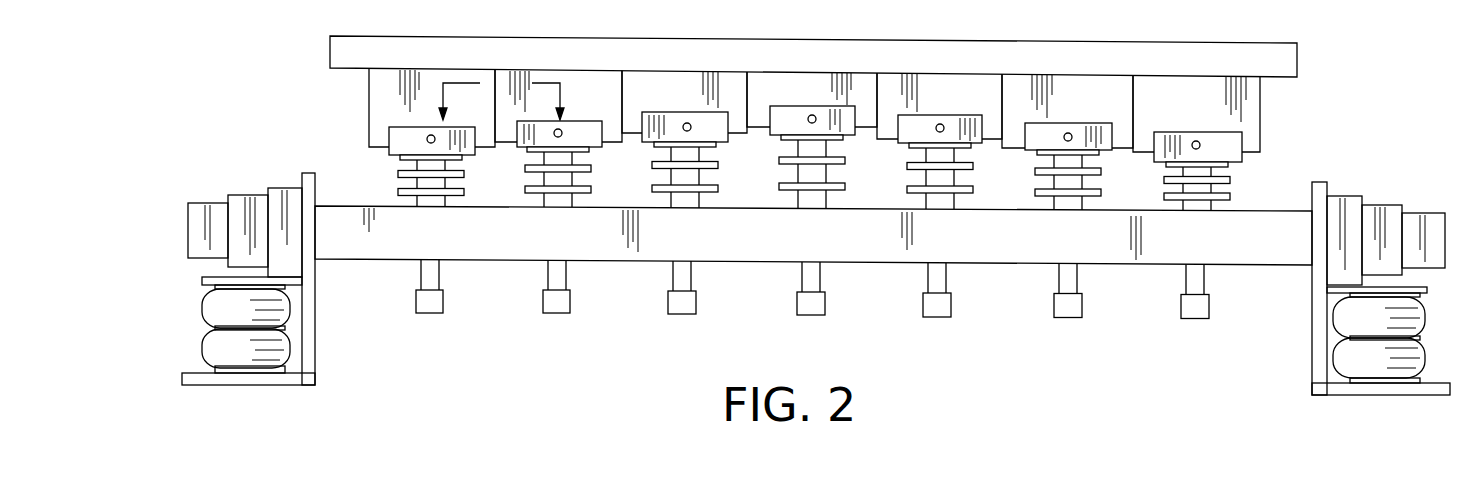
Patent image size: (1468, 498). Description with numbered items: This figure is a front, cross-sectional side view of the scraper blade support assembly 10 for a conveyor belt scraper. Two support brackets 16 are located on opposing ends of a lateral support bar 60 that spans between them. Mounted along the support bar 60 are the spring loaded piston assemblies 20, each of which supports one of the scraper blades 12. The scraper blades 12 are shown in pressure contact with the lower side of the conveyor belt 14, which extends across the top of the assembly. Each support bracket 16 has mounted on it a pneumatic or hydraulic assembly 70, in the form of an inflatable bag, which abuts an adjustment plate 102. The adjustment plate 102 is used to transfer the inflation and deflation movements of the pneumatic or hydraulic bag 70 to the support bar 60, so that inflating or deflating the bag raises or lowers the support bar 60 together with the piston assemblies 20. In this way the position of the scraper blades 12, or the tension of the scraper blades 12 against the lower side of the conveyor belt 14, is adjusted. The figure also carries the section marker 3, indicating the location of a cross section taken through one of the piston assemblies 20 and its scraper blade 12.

The scraper blade support assembly 10 is at (288, 188).
The scraper blades 12 is at (369, 104).
The conveyor belt 14 is at (1280, 60).
The support brackets 16 is at (288, 386).
The spring loaded piston assemblies 20 is at (548, 278).
The lateral support bar 60 is at (615, 264).
The pneumatic or hydraulic assemblies 70 is at (200, 355).
The adjustment plate 102 is at (202, 279).
The section line 3- 3 is at (499, 98).